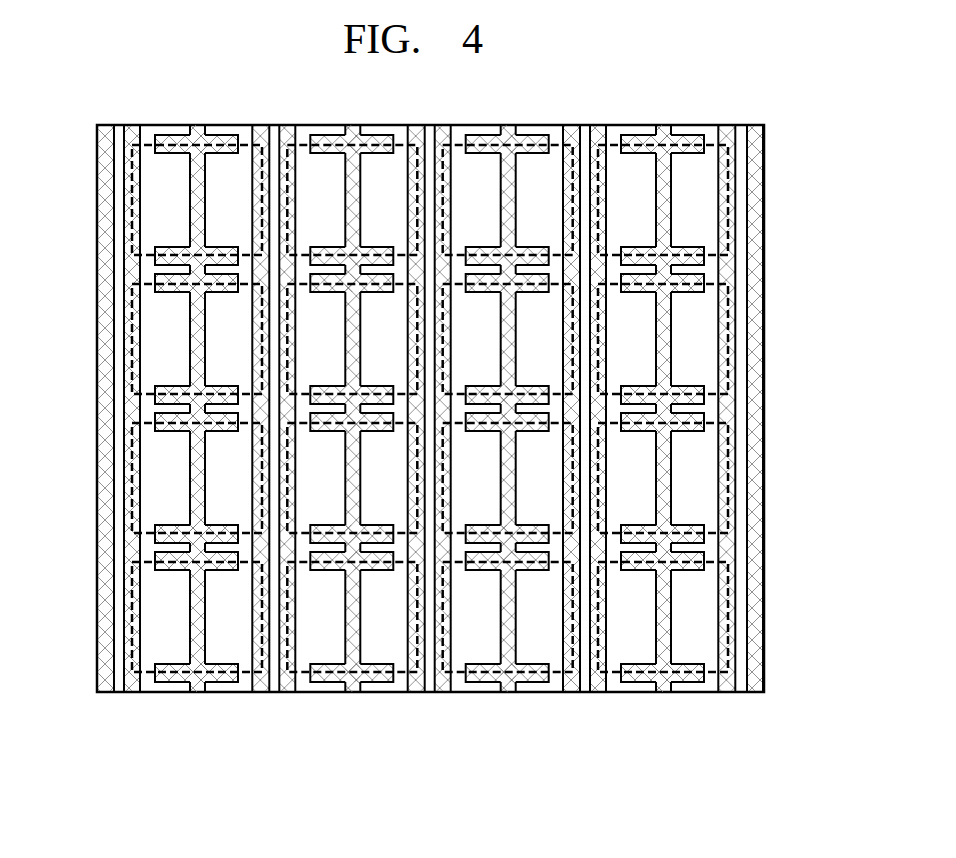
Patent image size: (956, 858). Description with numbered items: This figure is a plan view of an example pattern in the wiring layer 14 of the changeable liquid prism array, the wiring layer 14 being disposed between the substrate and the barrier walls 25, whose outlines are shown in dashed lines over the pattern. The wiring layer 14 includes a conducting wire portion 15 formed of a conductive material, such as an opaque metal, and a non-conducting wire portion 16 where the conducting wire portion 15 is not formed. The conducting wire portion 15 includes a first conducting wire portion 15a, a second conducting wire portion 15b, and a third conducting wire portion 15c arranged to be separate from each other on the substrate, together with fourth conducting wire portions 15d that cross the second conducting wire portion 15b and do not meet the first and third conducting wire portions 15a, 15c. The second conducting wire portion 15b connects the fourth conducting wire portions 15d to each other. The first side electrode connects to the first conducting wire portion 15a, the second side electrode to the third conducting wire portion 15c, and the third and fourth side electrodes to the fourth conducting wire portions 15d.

The wiring layer 14 is at (775, 177).
The conducting wire portion 15 is at (207, 463).
The first conducting wire portion 15a is at (100, 692).
The second conducting wire portion 15b is at (198, 692).
The third conducting wire portion 15c is at (132, 692).
The fourth conducting wire portions 15d is at (226, 692).
The non-conducting wire portion 16 is at (432, 679).
The barrier walls 25 is at (132, 611).